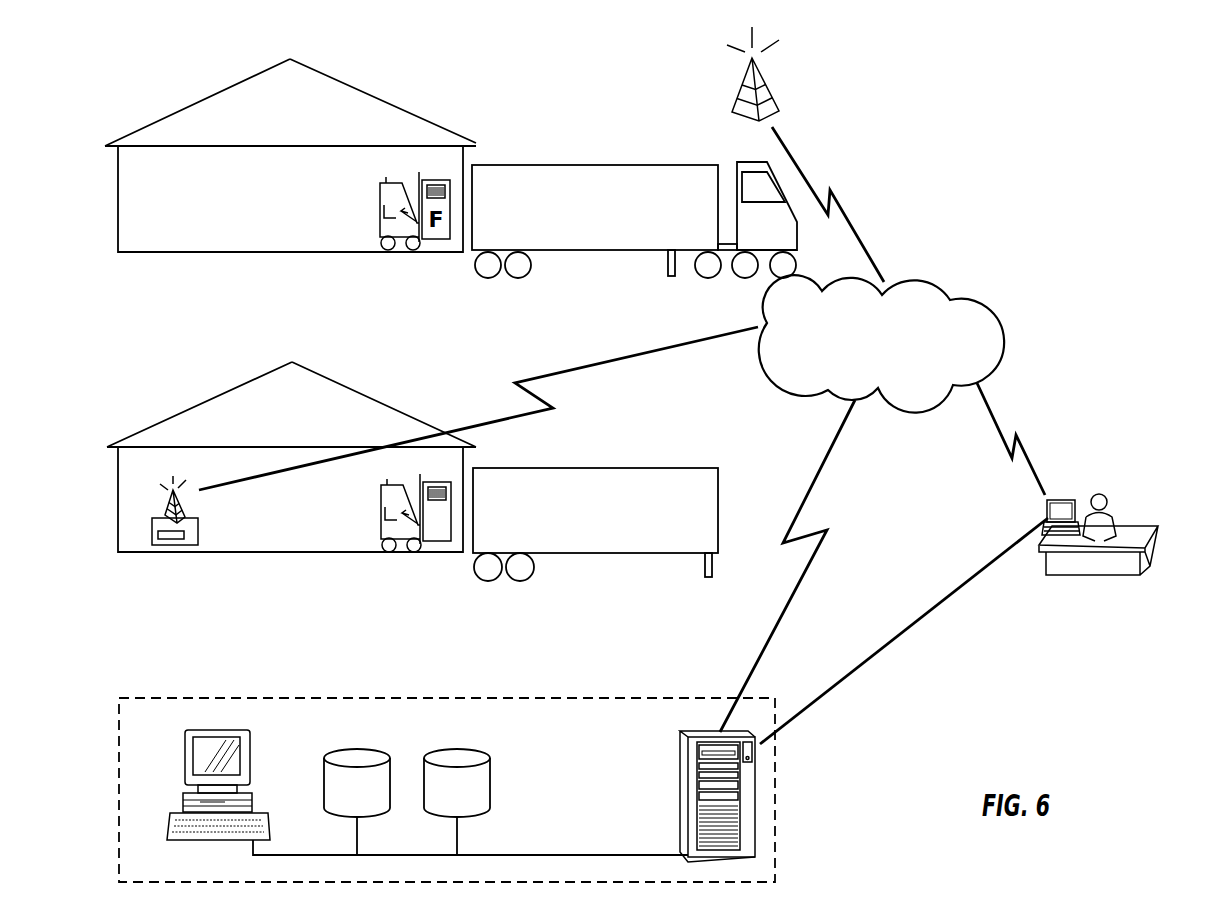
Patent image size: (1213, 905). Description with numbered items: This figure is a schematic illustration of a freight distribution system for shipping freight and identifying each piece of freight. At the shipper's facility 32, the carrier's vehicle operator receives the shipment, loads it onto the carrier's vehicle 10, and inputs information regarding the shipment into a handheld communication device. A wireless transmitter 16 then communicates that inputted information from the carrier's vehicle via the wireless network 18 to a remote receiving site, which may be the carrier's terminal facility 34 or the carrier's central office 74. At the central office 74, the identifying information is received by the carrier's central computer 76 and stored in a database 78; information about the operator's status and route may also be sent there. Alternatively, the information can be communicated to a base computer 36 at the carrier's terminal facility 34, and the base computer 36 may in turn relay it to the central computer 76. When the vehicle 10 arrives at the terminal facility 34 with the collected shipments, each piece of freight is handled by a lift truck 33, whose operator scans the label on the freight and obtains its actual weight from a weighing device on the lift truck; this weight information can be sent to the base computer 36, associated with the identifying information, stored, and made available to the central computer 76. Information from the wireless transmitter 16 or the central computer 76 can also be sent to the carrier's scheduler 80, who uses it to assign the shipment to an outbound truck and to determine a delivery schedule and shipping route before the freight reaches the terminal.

The truck trailer 10 is at (580, 165).
The wireless transmitter 16 is at (762, 90).
The wireless network 18 is at (888, 379).
The shipper's facility 32 is at (118, 206).
The lift truck 33 is at (388, 552).
The carrier's terminal facility 34 is at (118, 508).
The base computer 36 is at (198, 532).
The carrier's central office 74 is at (119, 766).
The central computer 76 is at (752, 797).
The database 78 is at (357, 749).
The carrier's scheduler 80 is at (1158, 528).